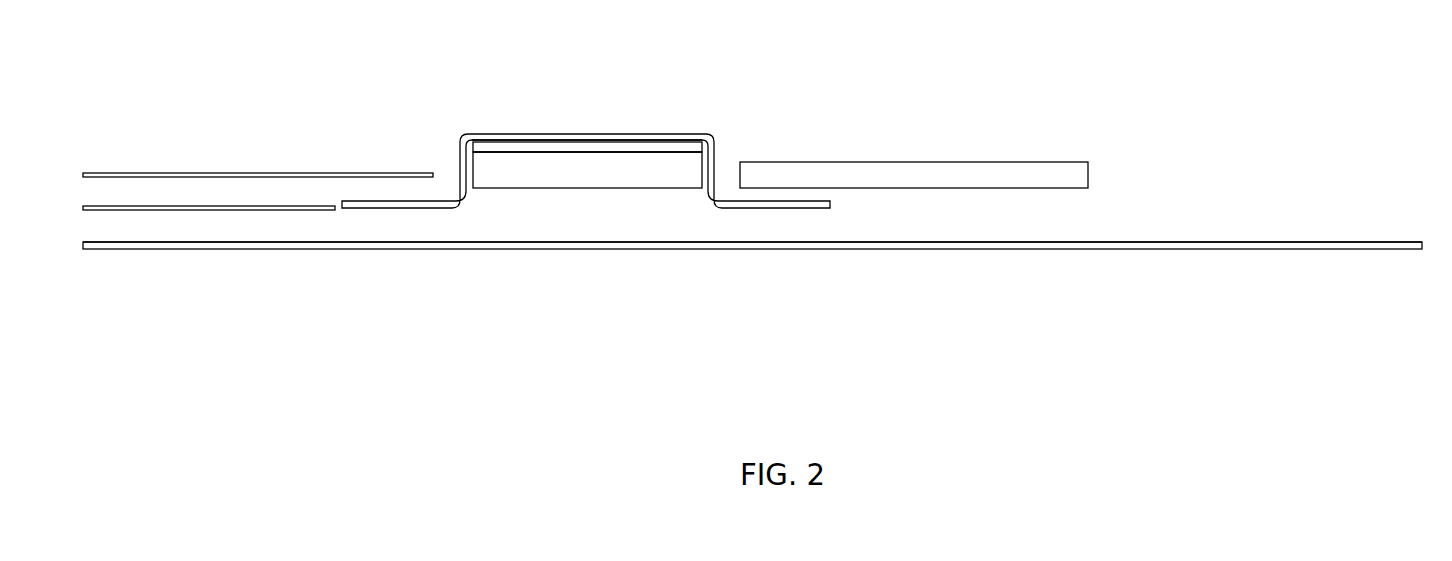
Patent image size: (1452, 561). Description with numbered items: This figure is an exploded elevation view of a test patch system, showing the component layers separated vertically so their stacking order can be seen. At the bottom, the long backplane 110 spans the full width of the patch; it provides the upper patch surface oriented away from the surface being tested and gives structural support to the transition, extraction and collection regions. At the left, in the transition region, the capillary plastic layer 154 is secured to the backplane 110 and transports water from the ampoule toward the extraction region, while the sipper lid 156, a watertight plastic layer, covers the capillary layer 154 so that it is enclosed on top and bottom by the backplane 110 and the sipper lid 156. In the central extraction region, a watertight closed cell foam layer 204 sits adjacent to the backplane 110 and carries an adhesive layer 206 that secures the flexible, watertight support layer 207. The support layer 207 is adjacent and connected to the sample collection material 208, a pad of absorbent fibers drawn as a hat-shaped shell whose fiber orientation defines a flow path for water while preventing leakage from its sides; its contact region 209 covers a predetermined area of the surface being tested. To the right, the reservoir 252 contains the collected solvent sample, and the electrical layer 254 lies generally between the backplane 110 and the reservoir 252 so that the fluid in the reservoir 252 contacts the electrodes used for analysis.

The backplane 110 is at (1322, 250).
The capillary plastic layer 154 is at (207, 212).
The sipper lid 156 is at (217, 172).
The closed cell foam layer 204 is at (512, 177).
The adhesive layer 206 is at (575, 153).
The support layer 207 is at (652, 148).
The sample collection material 208 is at (715, 140).
The contact region 209 is at (592, 137).
The reservoir 252 is at (908, 172).
The electrical layer 254 is at (1213, 243).